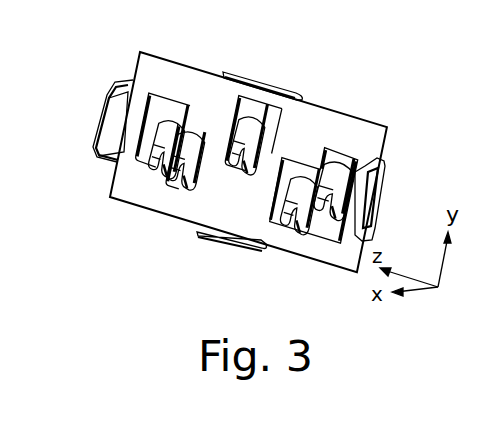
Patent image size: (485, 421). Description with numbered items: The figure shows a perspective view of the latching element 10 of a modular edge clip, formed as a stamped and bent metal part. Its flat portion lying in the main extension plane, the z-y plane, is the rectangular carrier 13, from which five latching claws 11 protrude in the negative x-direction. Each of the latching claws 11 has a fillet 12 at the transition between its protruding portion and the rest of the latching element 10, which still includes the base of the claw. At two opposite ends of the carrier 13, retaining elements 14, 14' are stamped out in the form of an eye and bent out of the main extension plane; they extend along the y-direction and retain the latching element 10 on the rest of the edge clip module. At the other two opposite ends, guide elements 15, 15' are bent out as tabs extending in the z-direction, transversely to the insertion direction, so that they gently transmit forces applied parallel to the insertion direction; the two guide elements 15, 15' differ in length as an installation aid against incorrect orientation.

The latching element 10 is at (383, 124).
The latching claws 11 is at (206, 137).
The fillets 12 is at (164, 152).
The carrier 13 is at (319, 128).
The retaining element 14 is at (85, 98).
The retaining element 14' is at (417, 199).
The guide element 15 is at (231, 284).
The guide element 15' is at (262, 50).